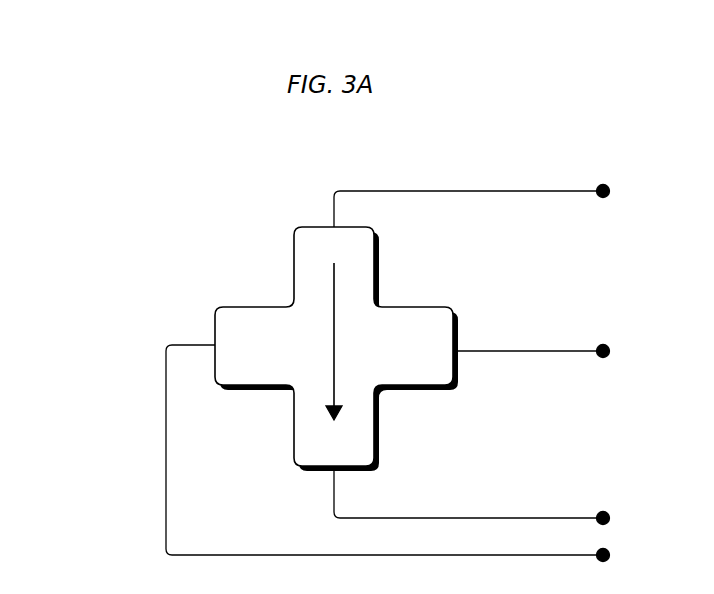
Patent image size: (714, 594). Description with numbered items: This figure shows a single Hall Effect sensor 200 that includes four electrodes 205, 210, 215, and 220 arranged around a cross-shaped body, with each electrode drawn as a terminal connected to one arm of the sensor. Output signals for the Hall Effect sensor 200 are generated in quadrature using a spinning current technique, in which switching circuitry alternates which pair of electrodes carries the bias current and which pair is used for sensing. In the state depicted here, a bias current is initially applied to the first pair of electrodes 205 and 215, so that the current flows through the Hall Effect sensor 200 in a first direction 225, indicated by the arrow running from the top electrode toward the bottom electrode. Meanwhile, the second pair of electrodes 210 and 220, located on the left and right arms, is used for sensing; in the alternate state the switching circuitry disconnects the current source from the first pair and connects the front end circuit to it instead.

The Hall Effect sensor 200 is at (128, 183).
The electrode 205 is at (496, 204).
The electrode 210 is at (557, 351).
The electrode 215 is at (496, 498).
The electrode 220 is at (412, 455).
The first direction 225 is at (333, 367).